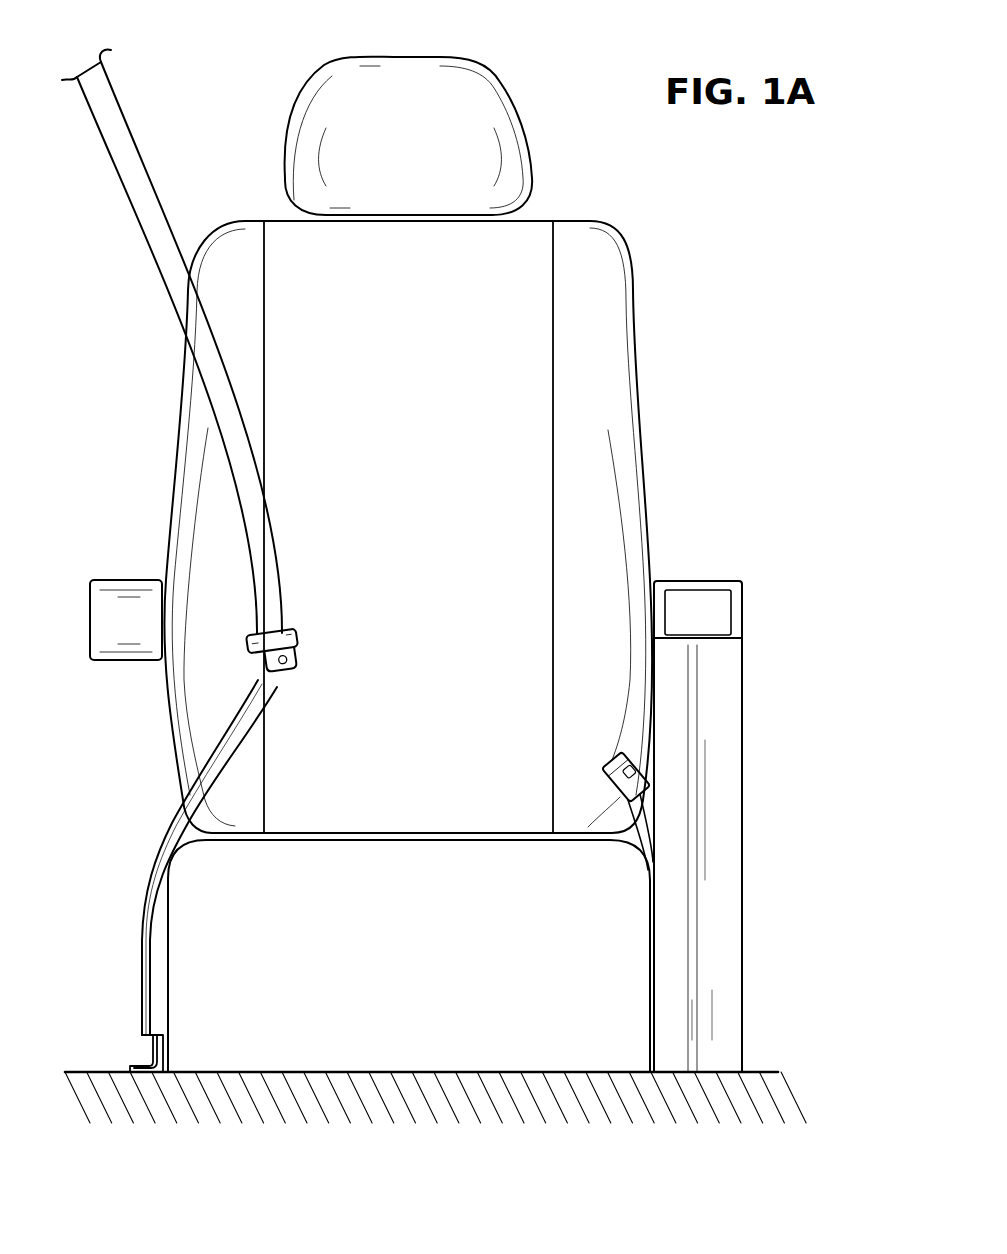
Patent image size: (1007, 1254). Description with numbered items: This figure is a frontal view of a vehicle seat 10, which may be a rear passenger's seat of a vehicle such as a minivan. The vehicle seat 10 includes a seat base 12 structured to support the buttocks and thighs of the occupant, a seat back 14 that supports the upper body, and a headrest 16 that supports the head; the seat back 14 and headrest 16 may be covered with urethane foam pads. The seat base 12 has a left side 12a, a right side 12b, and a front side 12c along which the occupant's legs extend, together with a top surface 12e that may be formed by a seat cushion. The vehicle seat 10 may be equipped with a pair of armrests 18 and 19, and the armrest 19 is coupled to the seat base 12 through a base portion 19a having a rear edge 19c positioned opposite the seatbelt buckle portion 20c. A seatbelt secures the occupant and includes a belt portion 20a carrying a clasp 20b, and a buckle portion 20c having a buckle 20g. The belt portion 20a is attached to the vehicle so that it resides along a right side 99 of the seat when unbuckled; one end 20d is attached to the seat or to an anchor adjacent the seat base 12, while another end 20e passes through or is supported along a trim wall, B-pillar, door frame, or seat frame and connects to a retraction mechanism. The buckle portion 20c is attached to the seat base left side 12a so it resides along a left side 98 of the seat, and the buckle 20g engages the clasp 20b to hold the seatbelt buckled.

The vehicle seat 10 is at (728, 280).
The seat base 12 is at (194, 1057).
The left side 12a is at (655, 930).
The right side 12b is at (167, 967).
The front side 12c is at (445, 952).
The top surface 12e is at (388, 838).
The seat back 14 is at (401, 478).
The headrest 16 is at (455, 102).
The armrest 18 is at (132, 580).
The armrest 19 is at (745, 799).
The base portion 19a is at (742, 905).
The rear edge 19c is at (700, 580).
The belt portion 20a is at (172, 322).
The clasp 20b is at (300, 634).
The buckle portion 20c is at (566, 781).
The end 20d is at (171, 876).
The end 20e is at (100, 98).
The buckle 20g is at (614, 756).
The left side 98 is at (640, 388).
The right side 99 is at (178, 477).